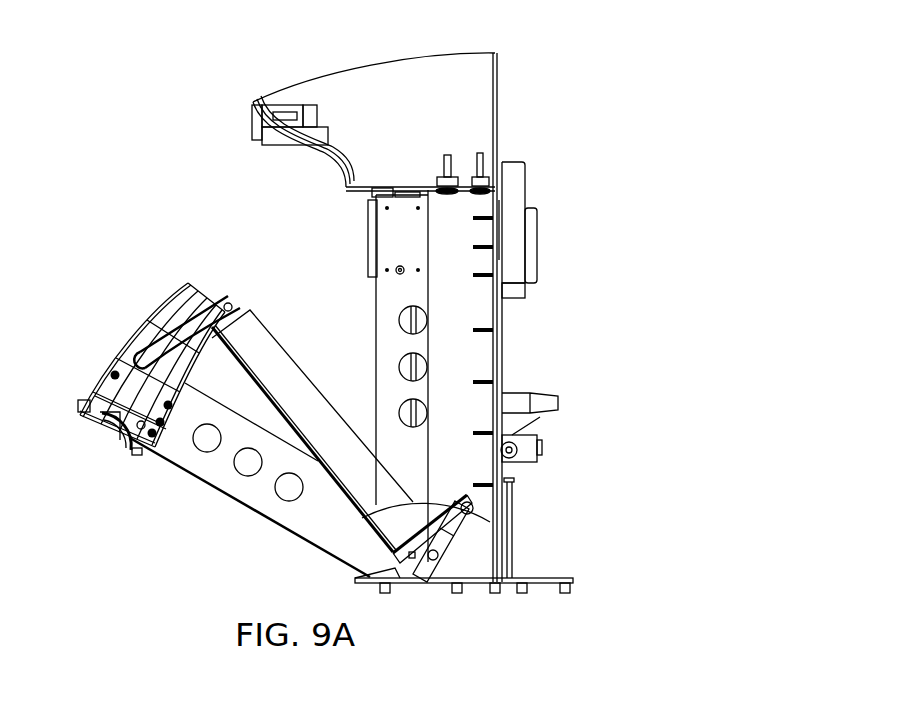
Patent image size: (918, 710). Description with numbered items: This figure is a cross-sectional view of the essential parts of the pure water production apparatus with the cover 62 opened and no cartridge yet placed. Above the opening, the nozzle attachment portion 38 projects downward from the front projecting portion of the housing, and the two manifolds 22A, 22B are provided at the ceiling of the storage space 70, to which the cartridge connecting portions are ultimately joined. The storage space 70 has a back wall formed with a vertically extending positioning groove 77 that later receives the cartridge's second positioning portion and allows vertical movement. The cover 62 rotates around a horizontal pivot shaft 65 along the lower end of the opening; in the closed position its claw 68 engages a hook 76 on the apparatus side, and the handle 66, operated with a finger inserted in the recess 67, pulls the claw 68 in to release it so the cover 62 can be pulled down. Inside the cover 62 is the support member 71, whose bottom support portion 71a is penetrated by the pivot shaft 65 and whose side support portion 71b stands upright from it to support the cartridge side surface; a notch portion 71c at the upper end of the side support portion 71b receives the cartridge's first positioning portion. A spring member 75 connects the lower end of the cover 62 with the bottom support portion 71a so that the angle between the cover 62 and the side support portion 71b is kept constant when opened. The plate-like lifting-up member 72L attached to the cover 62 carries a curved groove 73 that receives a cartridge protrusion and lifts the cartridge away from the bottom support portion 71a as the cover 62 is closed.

The nozzle attachment portion 38 is at (253, 124).
The manifold 22B is at (447, 154).
The manifold 22A is at (485, 152).
The hook 76 is at (372, 192).
The positioning groove 77 is at (502, 222).
The storage space 70 is at (460, 352).
The groove 73 is at (183, 328).
The notch portion 71c is at (230, 302).
The lifting-up member 72L is at (148, 320).
The claw 68 is at (88, 395).
The side support portion 71b is at (305, 395).
The handle 66 is at (96, 436).
The recess 67 is at (116, 442).
The cover 62 is at (178, 456).
The support member 71 is at (297, 443).
The bottom support portion 71a is at (415, 548).
The pivot shaft 65 is at (413, 560).
The spring member 75 is at (455, 535).